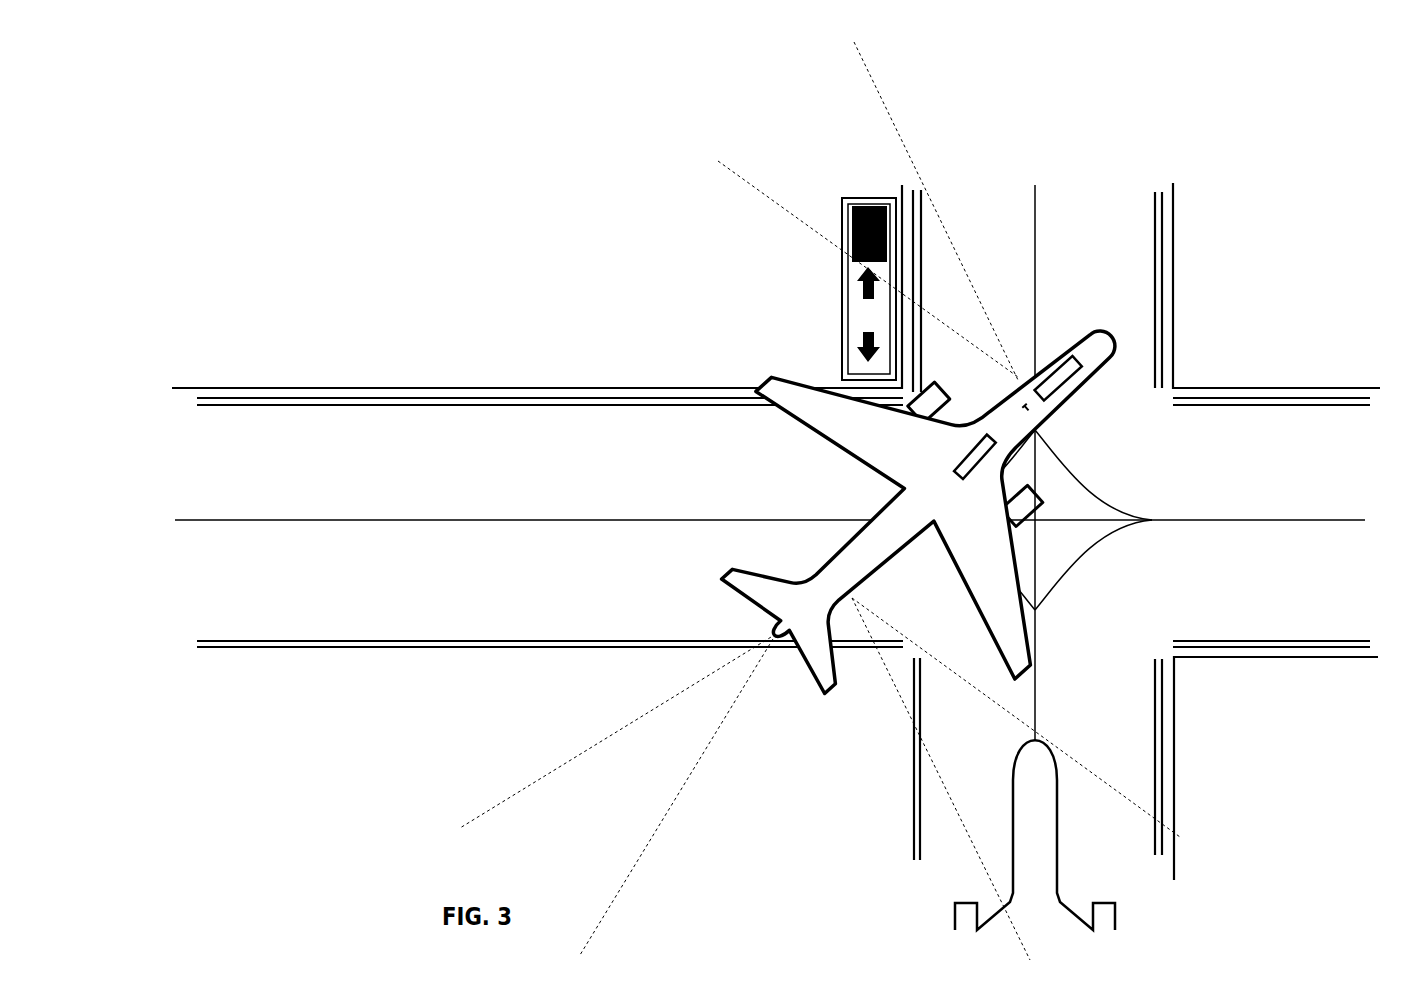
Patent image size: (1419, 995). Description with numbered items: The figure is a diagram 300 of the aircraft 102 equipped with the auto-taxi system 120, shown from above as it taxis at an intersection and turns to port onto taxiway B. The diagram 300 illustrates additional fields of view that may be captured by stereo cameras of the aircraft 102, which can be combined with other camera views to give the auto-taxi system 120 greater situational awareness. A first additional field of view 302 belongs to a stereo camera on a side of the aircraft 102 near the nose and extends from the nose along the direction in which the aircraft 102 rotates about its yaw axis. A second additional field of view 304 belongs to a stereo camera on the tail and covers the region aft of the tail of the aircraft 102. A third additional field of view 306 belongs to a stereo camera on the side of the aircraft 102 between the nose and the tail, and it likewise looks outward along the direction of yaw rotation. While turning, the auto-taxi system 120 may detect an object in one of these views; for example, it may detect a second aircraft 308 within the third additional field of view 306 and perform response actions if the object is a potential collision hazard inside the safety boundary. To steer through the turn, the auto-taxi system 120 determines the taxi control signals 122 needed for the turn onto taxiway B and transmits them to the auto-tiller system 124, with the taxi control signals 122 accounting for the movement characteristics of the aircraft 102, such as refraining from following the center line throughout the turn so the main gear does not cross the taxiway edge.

The diagram 300 is at (1326, 126).
The first additional field of view 302 is at (962, 248).
The second additional field of view 304 is at (515, 791).
The third additional field of view 306 is at (1079, 761).
The second aircraft 308 is at (1012, 776).
The aircraft 102 is at (1079, 331).
The auto-taxi system 120 is at (962, 454).
The taxi control signals 122 is at (1027, 409).
The auto-tiller system 124 is at (1079, 375).